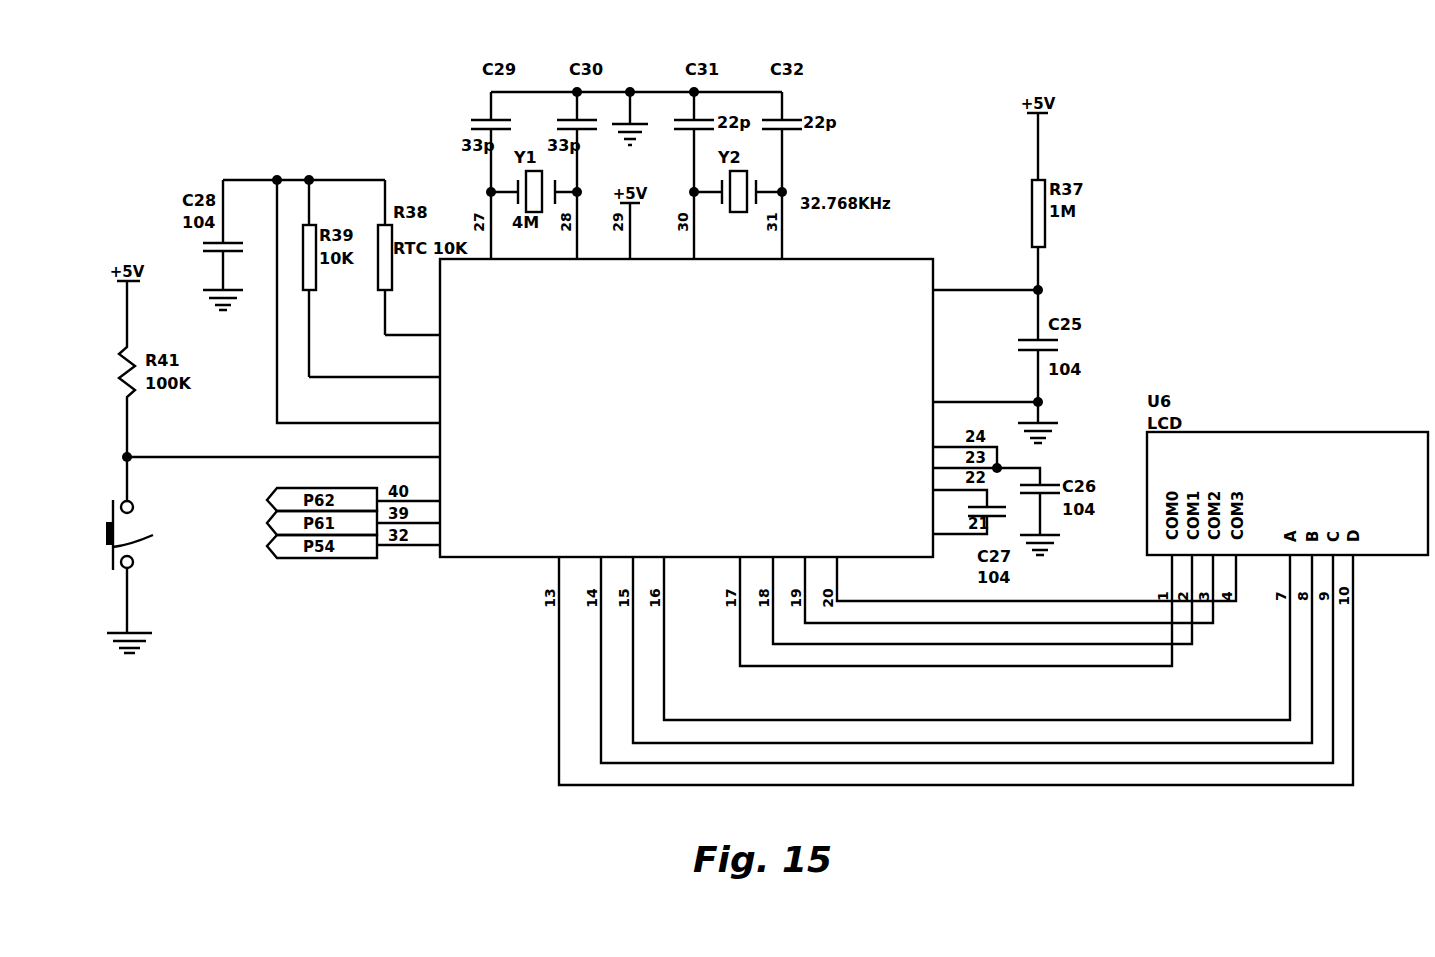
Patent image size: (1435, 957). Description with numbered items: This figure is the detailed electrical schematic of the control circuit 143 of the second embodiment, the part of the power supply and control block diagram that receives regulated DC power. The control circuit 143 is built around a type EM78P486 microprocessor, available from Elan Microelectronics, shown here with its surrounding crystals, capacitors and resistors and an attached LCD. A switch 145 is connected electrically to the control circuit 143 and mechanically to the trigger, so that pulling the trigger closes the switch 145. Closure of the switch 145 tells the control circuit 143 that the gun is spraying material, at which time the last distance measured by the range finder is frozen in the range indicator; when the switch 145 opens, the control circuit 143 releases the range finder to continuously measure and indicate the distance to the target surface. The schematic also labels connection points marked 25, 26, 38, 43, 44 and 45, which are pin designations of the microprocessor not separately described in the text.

The control circuit 143 is at (450, 624).
The switch S1 145 is at (153, 537).
The RESET pin line 25 is at (985, 280).
The GND pin line 26 is at (985, 392).
The P60 pin line 38 is at (283, 447).
The P65 pin line 43 is at (412, 325).
The P66 pin line 44 is at (374, 367).
The P67 pin line 45 is at (358, 301).